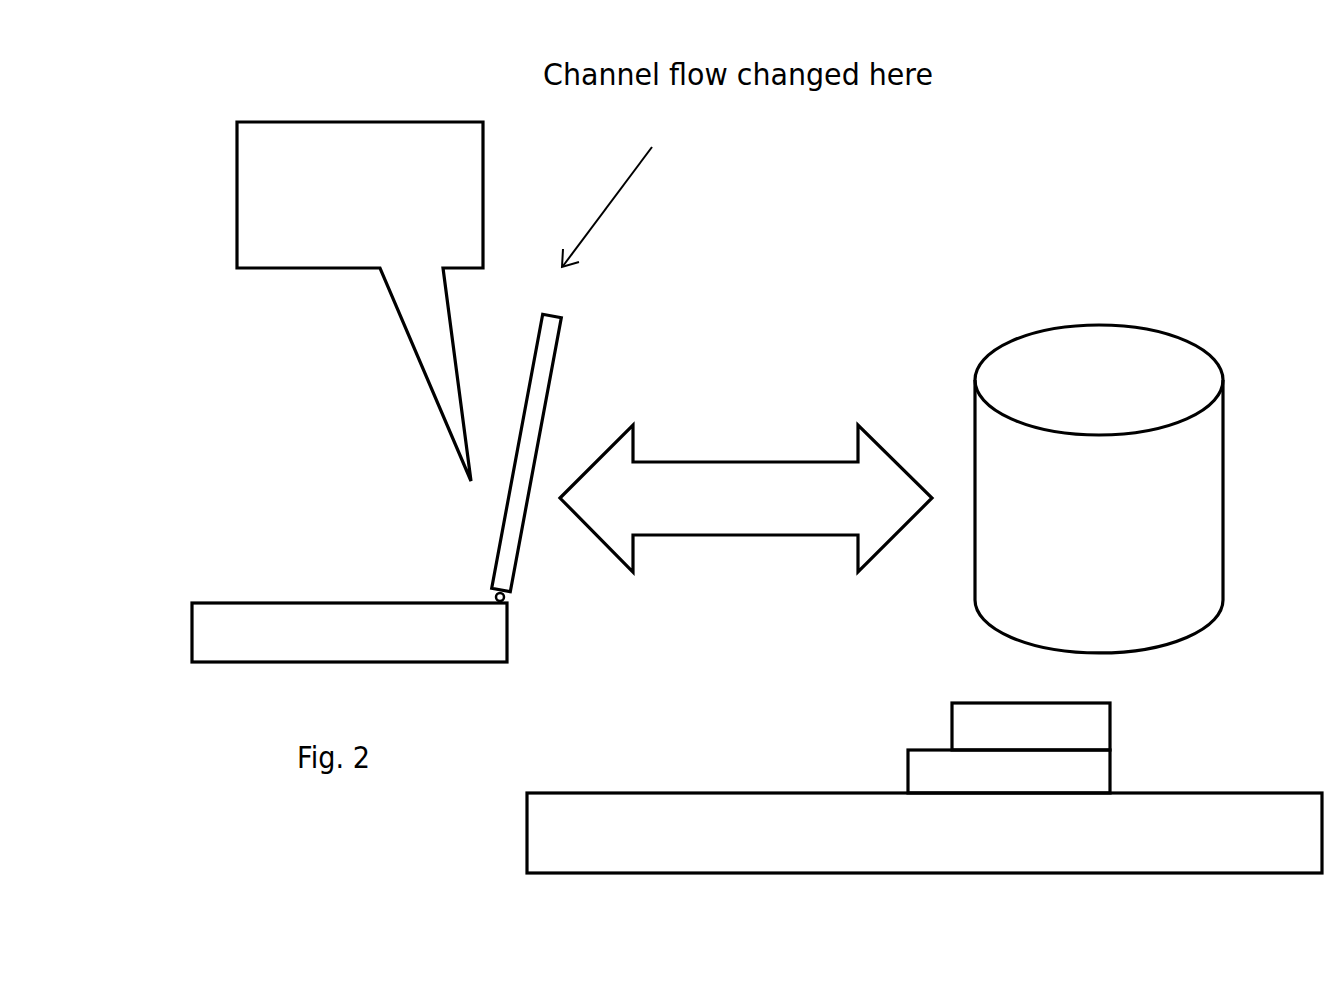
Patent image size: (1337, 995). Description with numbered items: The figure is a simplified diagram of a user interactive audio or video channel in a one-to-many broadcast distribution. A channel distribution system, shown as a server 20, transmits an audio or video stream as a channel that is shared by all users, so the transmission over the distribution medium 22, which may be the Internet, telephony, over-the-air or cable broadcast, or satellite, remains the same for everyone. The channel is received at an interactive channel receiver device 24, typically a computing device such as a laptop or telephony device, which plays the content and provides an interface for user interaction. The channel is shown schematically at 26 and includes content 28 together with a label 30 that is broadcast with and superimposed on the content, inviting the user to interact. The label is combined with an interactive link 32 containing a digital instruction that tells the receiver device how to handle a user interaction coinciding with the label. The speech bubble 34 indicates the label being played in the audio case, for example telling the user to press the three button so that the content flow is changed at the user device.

The server 20 is at (1099, 324).
The distribution medium 22 is at (785, 470).
The interactive channel receiver device 24 is at (540, 452).
The channel 26 is at (595, 759).
The content 28 is at (730, 783).
The label 30 is at (907, 772).
The interactive link 32 is at (952, 727).
The speech bubble 34 is at (327, 110).